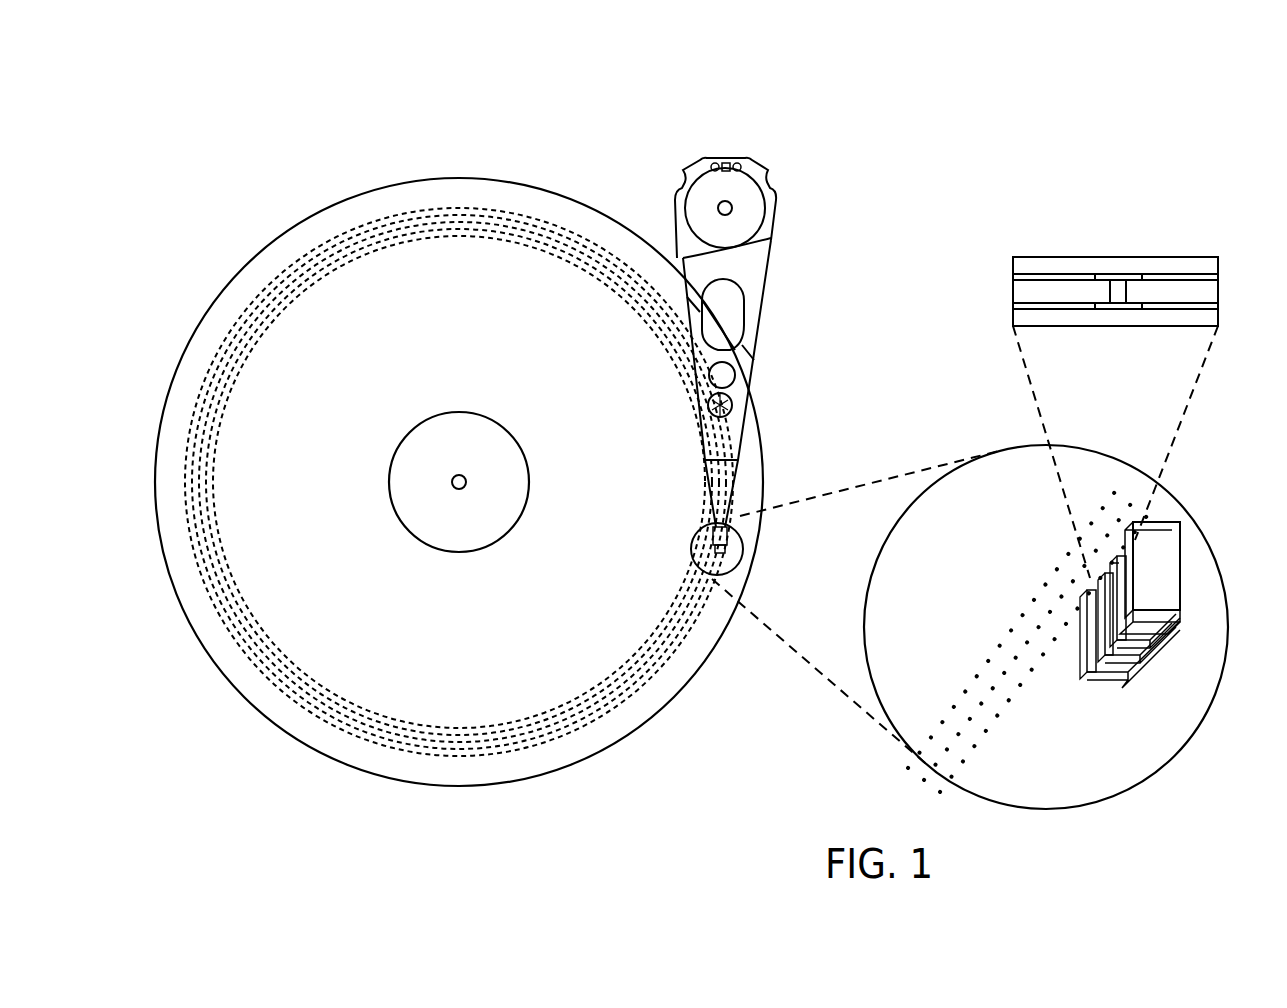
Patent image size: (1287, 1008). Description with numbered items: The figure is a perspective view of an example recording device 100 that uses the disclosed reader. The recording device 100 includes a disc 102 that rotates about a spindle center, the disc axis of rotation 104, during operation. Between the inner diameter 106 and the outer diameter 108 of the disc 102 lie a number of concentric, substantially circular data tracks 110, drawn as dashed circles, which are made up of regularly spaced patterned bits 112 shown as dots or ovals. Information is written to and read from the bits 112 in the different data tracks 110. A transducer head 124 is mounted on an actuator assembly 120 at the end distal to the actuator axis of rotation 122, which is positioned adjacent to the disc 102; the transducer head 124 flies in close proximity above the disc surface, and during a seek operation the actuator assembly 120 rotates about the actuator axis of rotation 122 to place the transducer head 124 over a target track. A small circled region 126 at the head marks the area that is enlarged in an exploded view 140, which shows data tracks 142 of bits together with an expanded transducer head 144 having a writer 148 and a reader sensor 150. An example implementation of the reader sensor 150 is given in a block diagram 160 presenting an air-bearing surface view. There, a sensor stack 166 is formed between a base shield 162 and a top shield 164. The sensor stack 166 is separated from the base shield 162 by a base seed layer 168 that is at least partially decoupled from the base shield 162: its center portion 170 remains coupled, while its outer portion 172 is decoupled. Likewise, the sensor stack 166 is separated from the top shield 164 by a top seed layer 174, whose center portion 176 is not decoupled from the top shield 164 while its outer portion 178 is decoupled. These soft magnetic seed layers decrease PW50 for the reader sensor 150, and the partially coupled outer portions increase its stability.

The recording device 100 is at (220, 156).
The disc 102 is at (530, 186).
The disc axis of rotation 104 is at (458, 483).
The inner diameter 106 is at (428, 413).
The outer diameter 108 is at (345, 225).
The data tracks 110 is at (226, 625).
The patterned bits 112 is at (300, 697).
The actuator assembly 120 is at (765, 283).
The actuator axis of rotation 122 is at (733, 206).
The transducer head 124 is at (728, 548).
The zoomed region 126 is at (712, 530).
The exploded view 140 is at (1122, 793).
The data tracks 142 is at (975, 748).
The transducer head 144 is at (1166, 632).
The writer 148 is at (1130, 575).
The reader sensor 150 is at (1095, 615).
The block diagram 160 is at (1182, 220).
The base shield 162 is at (1013, 320).
The top shield 164 is at (1142, 270).
The sensor stack 166 is at (1110, 274).
The base seed layer 168 is at (1013, 305).
The center portion of the base seed layer 170 is at (1118, 308).
The outer portion of the base seed layer 172 is at (1057, 308).
The top seed layer 174 is at (1013, 276).
The center portion of the top seed layer 176 is at (1125, 277).
The outer portion of the top seed layer 178 is at (1050, 275).